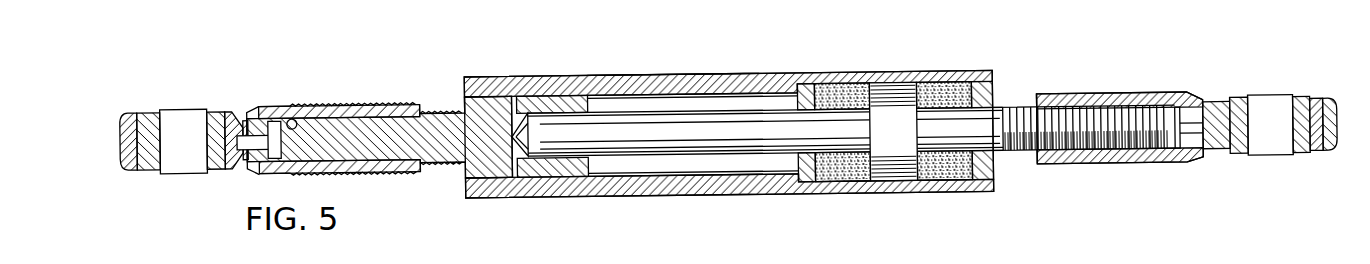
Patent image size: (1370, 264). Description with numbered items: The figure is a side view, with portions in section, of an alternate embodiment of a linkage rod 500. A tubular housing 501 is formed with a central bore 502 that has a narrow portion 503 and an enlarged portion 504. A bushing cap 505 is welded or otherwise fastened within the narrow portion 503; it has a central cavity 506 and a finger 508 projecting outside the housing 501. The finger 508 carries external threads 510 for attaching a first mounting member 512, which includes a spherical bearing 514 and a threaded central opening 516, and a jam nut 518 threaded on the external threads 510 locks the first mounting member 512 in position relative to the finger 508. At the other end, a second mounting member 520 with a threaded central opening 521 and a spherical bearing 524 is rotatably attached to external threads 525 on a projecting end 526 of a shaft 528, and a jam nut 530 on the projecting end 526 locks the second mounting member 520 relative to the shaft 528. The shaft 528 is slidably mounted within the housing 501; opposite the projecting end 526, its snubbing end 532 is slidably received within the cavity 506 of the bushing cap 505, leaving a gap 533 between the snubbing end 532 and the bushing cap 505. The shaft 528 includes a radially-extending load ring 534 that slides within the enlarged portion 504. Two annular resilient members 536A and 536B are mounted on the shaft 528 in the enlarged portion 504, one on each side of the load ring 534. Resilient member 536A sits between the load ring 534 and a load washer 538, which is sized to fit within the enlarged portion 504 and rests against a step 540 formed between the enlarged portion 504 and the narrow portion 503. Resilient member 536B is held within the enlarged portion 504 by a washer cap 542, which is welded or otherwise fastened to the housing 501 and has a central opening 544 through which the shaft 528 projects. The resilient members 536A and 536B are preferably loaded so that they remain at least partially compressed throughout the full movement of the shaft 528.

The linkage rod 500 is at (493, 73).
The tubular housing 501 is at (664, 73).
The central bore 502 is at (704, 93).
The narrow portion 503 is at (694, 173).
The enlarged portion 504 is at (887, 178).
The bushing cap 505 is at (464, 102).
The central cavity 506 is at (518, 150).
The finger 508 is at (444, 161).
The external threads 510 is at (455, 162).
The first mounting member 512 is at (296, 107).
The spherical bearing 514 is at (171, 158).
The threaded central opening 516 is at (298, 118).
The jam nut 518 is at (411, 166).
The second mounting member 520 is at (1182, 93).
The threaded central opening 521 is at (1170, 146).
The spherical bearing 524 is at (1239, 150).
The external threads 525 is at (1142, 152).
The projecting end 526 is at (1105, 93).
The shaft 528 is at (715, 143).
The jam nut 530 is at (1045, 160).
The snubbing end 532 is at (561, 75).
The gap 533 is at (512, 125).
The load ring 534 is at (912, 140).
The resilient member 536A is at (834, 92).
The resilient member 536B is at (904, 82).
The load washer 538 is at (794, 72).
The step 540 is at (788, 176).
The washer cap 542 is at (996, 165).
The central opening 544 is at (1004, 105).